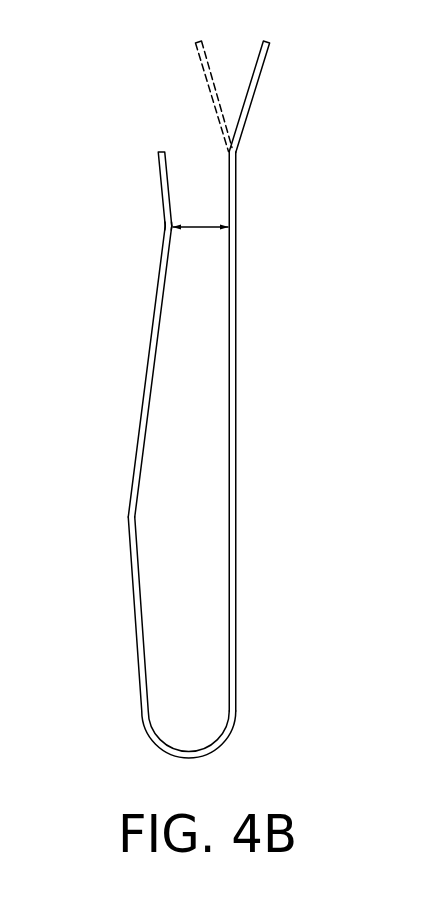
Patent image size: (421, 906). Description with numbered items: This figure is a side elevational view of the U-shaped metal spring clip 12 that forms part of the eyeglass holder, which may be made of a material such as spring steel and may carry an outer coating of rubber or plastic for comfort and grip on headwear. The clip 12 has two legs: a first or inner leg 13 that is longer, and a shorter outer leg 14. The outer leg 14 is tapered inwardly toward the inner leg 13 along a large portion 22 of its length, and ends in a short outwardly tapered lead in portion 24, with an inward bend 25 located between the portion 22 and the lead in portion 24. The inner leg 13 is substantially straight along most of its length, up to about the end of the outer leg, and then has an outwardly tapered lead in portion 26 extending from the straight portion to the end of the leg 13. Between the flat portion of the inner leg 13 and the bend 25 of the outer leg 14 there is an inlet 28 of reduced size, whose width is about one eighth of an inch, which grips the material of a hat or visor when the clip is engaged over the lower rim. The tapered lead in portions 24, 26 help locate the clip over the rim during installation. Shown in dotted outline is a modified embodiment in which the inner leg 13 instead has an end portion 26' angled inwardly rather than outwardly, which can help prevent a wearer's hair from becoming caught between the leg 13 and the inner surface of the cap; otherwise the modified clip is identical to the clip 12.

The metal spring clip 12 is at (220, 399).
The inner leg 13 is at (237, 455).
The outer leg 14 is at (138, 651).
The inwardly tapered portion 22 is at (145, 388).
The lead in portion 24 is at (158, 186).
The inward bend 25 is at (164, 227).
The lead in portion 26 is at (278, 97).
The end portion 26' is at (178, 96).
The inlet 28 is at (200, 223).